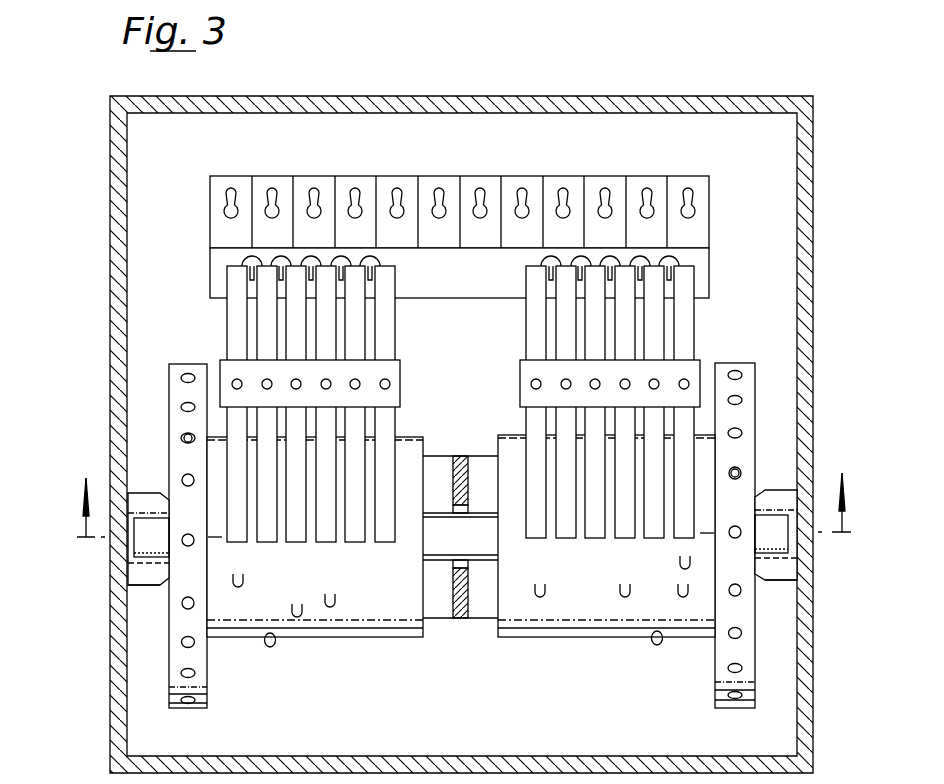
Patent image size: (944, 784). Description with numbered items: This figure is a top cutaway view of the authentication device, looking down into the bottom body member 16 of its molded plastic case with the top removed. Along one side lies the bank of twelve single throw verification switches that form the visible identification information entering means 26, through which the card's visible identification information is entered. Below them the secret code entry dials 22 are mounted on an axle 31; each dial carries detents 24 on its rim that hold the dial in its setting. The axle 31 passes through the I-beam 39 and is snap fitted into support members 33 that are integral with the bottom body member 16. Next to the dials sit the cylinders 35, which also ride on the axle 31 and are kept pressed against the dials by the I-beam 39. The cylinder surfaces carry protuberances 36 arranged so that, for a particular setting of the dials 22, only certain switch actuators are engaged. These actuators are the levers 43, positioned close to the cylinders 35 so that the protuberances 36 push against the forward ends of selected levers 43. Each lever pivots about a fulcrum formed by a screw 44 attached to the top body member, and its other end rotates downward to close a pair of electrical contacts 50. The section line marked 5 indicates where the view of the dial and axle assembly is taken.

The bottom body member 16 is at (110, 278).
The secret code entry dials 22 is at (187, 378).
The detents 24 is at (187, 438).
The visible identification information entering means 26 is at (703, 213).
The axle 31 is at (150, 530).
The support members 33 is at (140, 577).
The cylinders 35 is at (383, 629).
The protuberances 36 is at (270, 648).
The I-beam 39 is at (488, 619).
The levers 43 is at (296, 542).
The screw 44 is at (386, 384).
The electrical contacts 50 is at (245, 258).
The section line 5- 5 is at (464, 525).